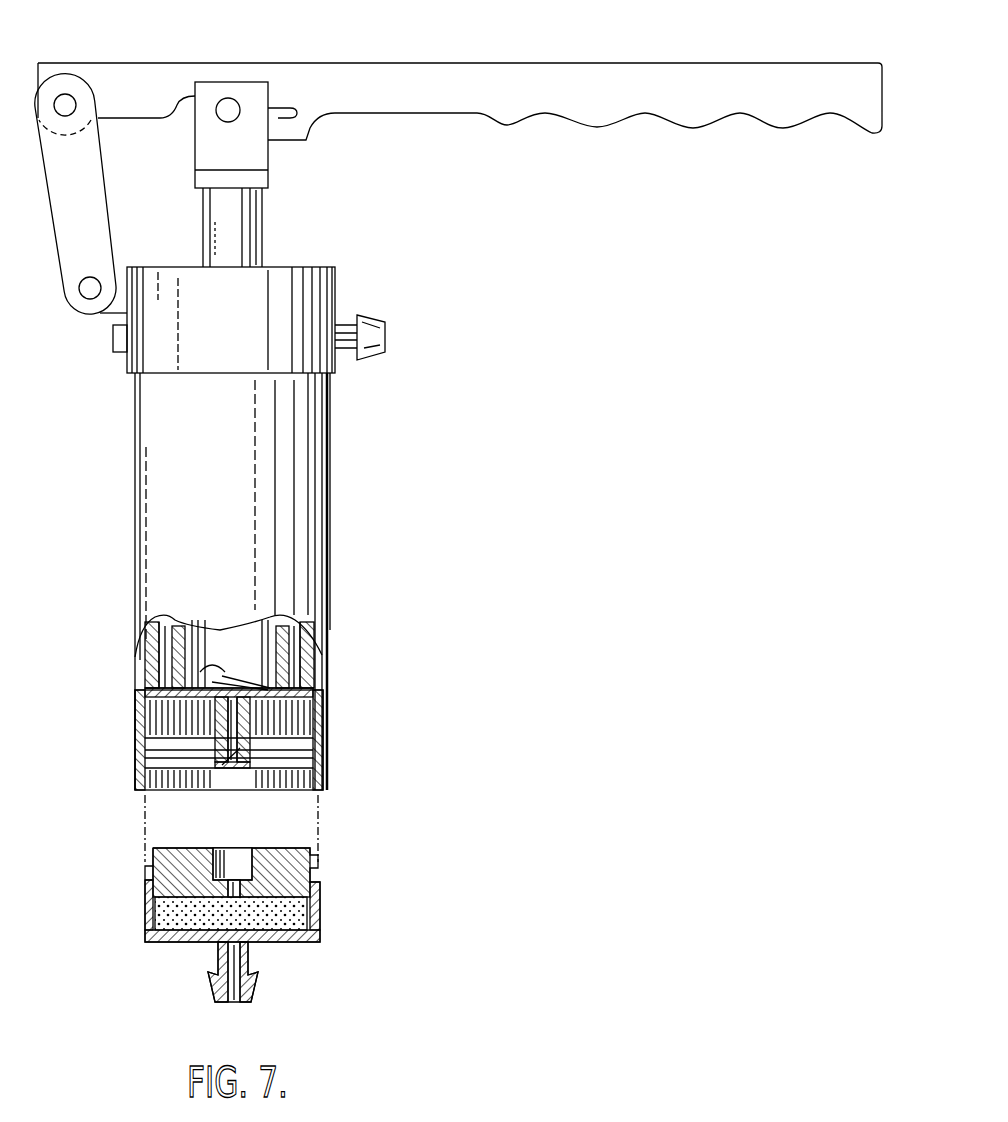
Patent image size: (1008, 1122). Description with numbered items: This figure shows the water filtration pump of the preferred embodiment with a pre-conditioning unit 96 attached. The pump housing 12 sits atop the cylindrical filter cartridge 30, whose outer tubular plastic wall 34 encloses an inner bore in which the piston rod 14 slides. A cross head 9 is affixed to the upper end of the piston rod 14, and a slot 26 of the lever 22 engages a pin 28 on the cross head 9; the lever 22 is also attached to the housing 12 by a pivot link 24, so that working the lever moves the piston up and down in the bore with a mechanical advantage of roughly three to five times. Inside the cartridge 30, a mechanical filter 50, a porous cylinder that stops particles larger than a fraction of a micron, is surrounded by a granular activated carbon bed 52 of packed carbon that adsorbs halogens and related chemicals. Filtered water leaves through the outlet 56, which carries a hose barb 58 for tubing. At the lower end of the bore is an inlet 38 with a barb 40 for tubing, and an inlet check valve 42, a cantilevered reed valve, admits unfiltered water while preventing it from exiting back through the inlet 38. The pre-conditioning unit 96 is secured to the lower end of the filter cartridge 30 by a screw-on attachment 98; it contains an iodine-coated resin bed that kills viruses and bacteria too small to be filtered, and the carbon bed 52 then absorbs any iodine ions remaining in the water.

The lever 22 is at (372, 77).
The pin 28 is at (218, 112).
The cross head 9 is at (205, 157).
The slot 26 is at (297, 113).
The pivot link 24 is at (83, 201).
The piston rod 14 is at (237, 240).
The pump housing 12 is at (297, 268).
The hose barb 58 is at (370, 316).
The outlet 56 is at (386, 338).
The filter cartridge 30 is at (348, 571).
The mechanical filter 50 is at (297, 620).
The granular activated carbon bed 52 is at (308, 662).
The outer tubular plastic wall 34 is at (305, 693).
The inlet check valve 42 is at (178, 697).
The screw-on attachment 98 is at (303, 746).
The barb 40 is at (222, 765).
The inlet 38 is at (235, 718).
The pre-conditioning unit 96 is at (310, 898).